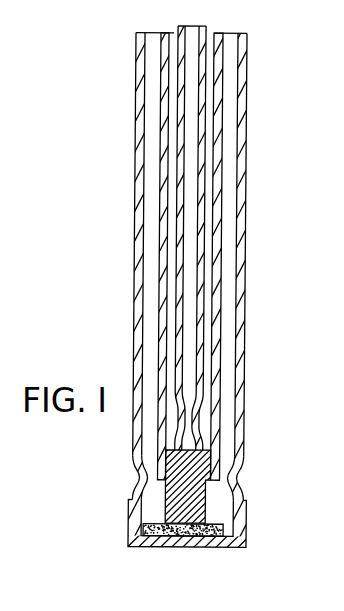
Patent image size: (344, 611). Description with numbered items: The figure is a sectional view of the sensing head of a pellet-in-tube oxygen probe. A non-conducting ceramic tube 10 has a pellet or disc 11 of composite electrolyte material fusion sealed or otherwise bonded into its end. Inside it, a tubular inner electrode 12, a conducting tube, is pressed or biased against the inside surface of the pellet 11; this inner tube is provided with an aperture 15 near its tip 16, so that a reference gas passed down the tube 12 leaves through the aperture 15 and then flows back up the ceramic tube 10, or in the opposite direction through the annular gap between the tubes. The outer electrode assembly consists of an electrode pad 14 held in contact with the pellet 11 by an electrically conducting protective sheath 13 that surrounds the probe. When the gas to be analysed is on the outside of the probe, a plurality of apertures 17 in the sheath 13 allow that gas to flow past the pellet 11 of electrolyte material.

The non-conducting ceramic tube 10 is at (218, 88).
The pellet or disc of composite electrolyte material 11 is at (197, 500).
The tubular inner electrode 12 is at (202, 123).
The electrically conducting protective sheath 13 is at (243, 49).
The electrode pad 14 is at (220, 532).
The aperture 15 is at (196, 414).
The tip 16 is at (187, 444).
The apertures 17 is at (236, 468).